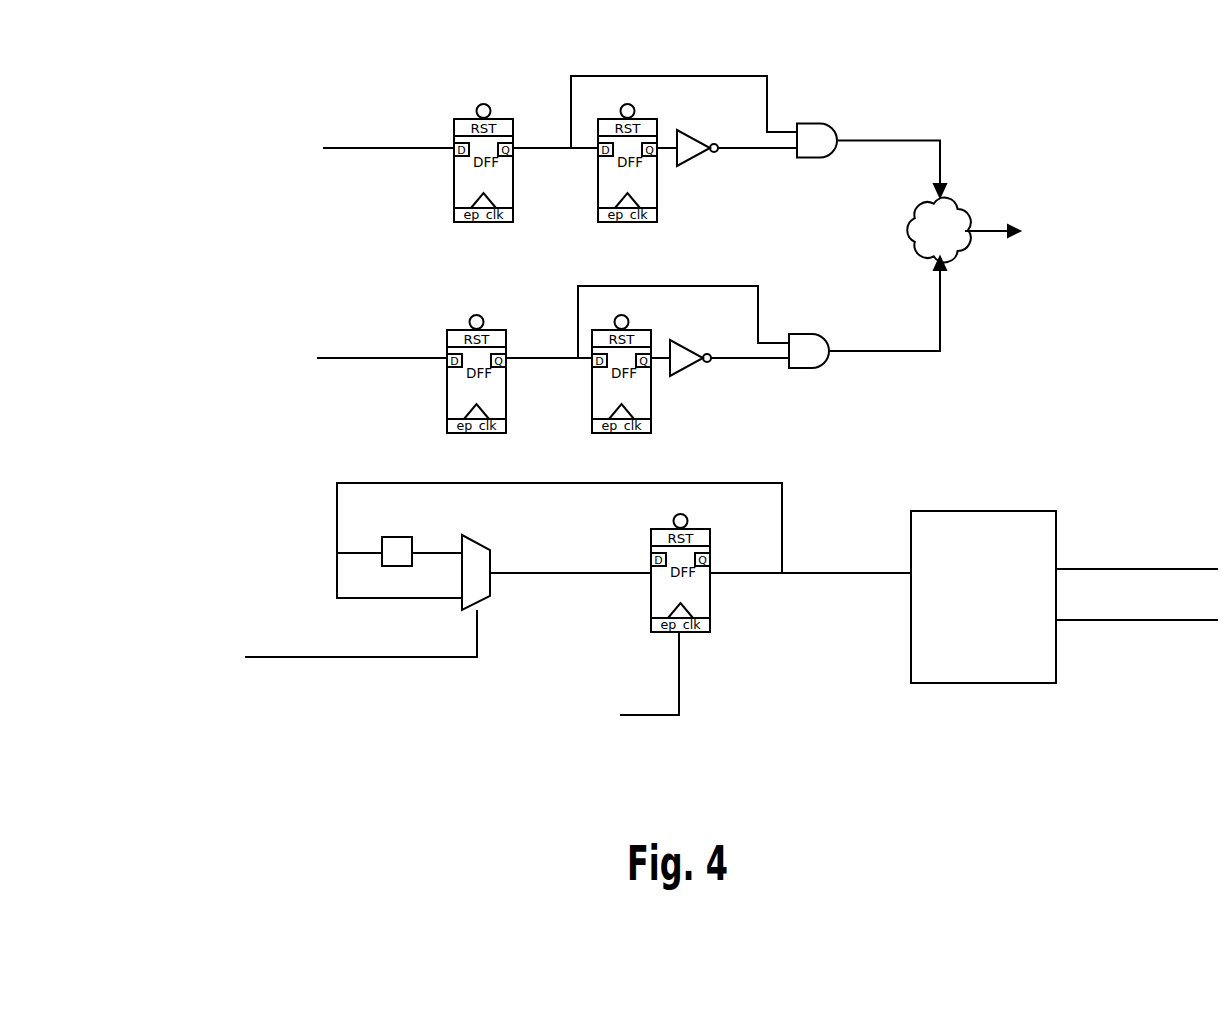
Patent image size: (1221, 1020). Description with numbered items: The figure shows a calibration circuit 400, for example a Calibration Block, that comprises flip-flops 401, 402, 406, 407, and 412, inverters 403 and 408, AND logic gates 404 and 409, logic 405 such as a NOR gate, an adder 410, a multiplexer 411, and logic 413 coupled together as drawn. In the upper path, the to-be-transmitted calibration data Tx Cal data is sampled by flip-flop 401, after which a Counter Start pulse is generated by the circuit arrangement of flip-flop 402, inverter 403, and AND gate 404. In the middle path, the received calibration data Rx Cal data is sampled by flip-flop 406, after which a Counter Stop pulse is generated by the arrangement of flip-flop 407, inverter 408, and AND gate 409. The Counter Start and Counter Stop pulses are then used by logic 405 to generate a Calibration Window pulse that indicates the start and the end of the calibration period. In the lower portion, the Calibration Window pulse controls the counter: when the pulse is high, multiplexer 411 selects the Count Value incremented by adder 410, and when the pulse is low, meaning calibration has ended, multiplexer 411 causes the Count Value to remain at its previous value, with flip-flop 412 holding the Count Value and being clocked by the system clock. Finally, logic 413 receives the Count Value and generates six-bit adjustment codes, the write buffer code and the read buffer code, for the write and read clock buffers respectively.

The calibration circuit 400 is at (208, 122).
The flip-flop 401 is at (472, 178).
The flip-flop 402 is at (622, 178).
The inverter 403 is at (690, 150).
The AND gate 404 is at (810, 137).
The logic 405 is at (958, 245).
The flip-flop 406 is at (463, 395).
The flip-flop 407 is at (610, 393).
The inverter 408 is at (680, 367).
The AND gate 409 is at (807, 348).
The adder 410 is at (407, 538).
The multiplexer 411 is at (493, 578).
The flip-flop 412 is at (652, 542).
The logic 413 is at (950, 533).